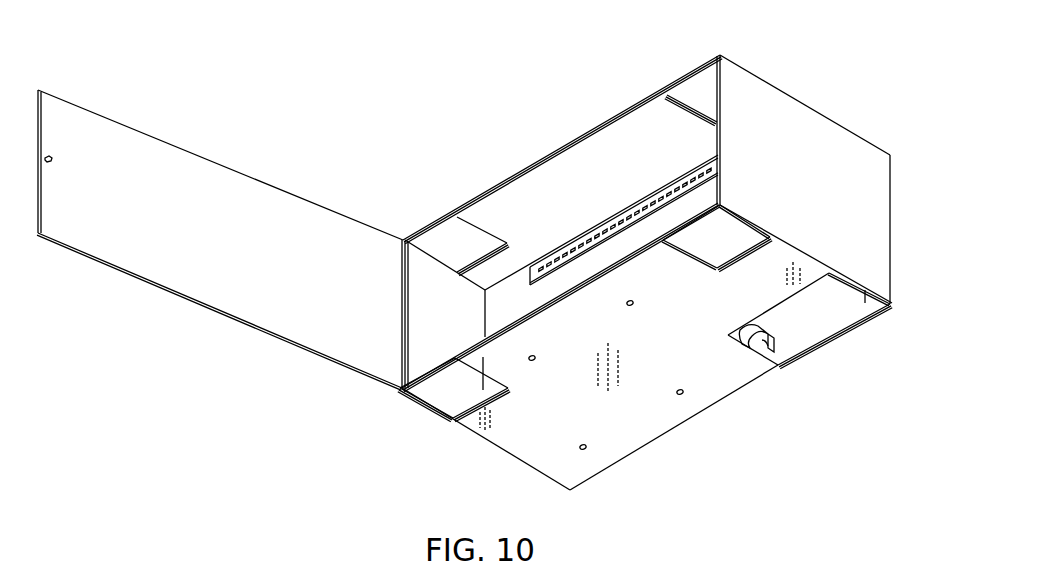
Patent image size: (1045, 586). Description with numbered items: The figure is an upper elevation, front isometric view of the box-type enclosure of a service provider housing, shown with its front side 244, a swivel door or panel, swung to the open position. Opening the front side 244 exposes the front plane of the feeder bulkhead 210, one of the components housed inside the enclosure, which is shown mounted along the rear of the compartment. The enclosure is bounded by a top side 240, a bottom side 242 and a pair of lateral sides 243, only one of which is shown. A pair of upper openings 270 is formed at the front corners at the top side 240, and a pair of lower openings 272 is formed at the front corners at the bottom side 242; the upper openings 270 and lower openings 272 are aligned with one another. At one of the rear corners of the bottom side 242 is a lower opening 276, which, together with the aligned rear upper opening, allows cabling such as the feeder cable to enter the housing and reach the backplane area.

The top side 240 is at (574, 133).
The bottom side 242 is at (653, 420).
The lateral side 243 is at (827, 190).
The front side 244 is at (247, 254).
The feeder bulkhead 210 is at (585, 240).
The upper openings 270 is at (447, 237).
The lower openings 272 is at (445, 395).
The lower opening 276 is at (825, 312).